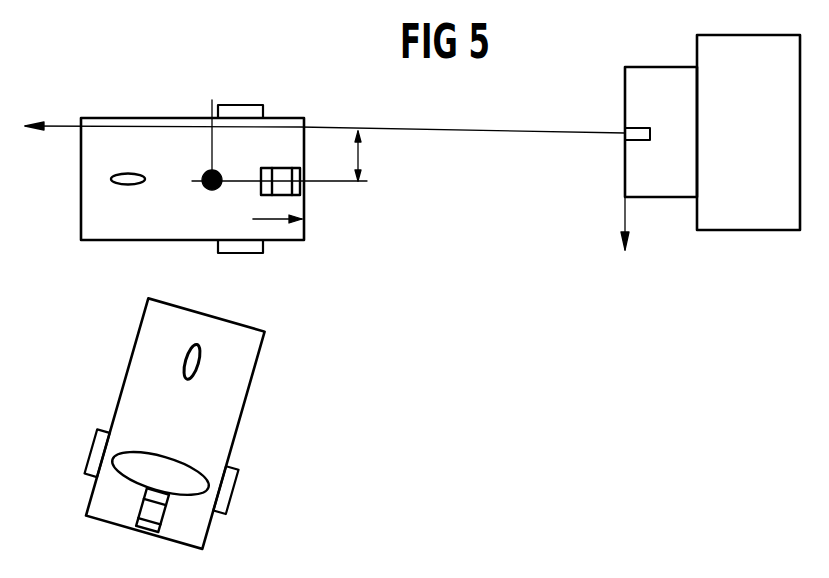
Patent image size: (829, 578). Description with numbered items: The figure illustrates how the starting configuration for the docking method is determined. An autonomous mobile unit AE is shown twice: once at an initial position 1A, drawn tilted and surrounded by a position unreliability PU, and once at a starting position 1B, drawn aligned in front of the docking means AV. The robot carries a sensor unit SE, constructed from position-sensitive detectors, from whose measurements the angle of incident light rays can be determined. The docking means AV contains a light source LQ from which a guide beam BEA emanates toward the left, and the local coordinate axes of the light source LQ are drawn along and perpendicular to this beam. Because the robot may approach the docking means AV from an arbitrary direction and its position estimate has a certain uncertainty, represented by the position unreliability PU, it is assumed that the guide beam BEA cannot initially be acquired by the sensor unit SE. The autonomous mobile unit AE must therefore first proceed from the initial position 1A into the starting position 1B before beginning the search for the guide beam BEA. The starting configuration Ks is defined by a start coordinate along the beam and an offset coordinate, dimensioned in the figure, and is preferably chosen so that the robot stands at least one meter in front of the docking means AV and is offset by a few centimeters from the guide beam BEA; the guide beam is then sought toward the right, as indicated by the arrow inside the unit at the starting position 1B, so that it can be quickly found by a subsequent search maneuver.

The initial position 1A is at (196, 424).
The starting position 1B is at (290, 238).
The autonomous mobile unit AE is at (207, 328).
The position unreliability PU is at (160, 473).
The sensor unit SE is at (152, 510).
The starting configuration Ks is at (208, 173).
The guide beam BEA is at (525, 135).
The light source LQ is at (645, 127).
The docking means AV is at (745, 220).